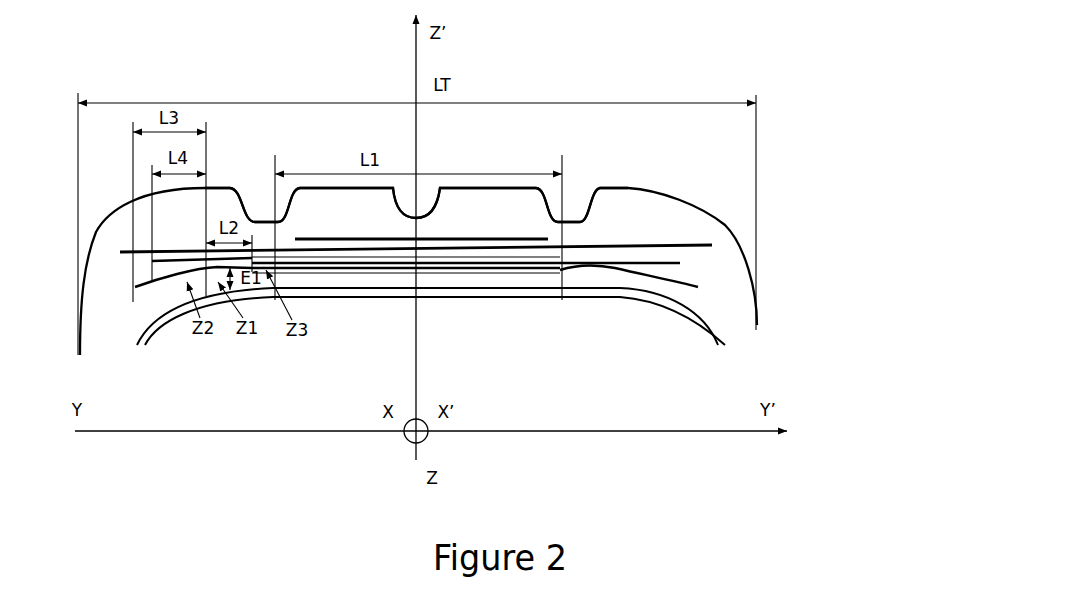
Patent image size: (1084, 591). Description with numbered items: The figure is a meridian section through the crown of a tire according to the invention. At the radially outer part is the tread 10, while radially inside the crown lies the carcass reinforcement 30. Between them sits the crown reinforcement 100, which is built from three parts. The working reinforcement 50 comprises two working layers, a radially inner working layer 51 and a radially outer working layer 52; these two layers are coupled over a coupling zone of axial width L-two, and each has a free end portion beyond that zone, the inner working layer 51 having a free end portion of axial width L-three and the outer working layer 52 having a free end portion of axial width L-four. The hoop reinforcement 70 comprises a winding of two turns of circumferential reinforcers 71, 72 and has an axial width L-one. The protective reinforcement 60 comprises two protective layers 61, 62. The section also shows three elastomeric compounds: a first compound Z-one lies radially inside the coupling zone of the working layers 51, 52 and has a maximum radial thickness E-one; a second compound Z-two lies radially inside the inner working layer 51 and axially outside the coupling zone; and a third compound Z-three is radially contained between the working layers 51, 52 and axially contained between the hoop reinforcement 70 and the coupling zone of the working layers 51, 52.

The crown reinforcement 100 is at (847, 125).
The tread 10 is at (540, 185).
The carcass reinforcement 30 is at (736, 343).
The working reinforcement 50 is at (797, 202).
The radially inner working layer 51 is at (688, 276).
The radially outer working layer 52 is at (657, 255).
The protective reinforcement 60 is at (797, 125).
The protective layer 61 is at (588, 238).
The protective layer 62 is at (490, 237).
The hoop reinforcement 70 is at (797, 280).
The circumferential reinforcer turn 71 is at (560, 272).
The circumferential reinforcer turn 72 is at (560, 271).